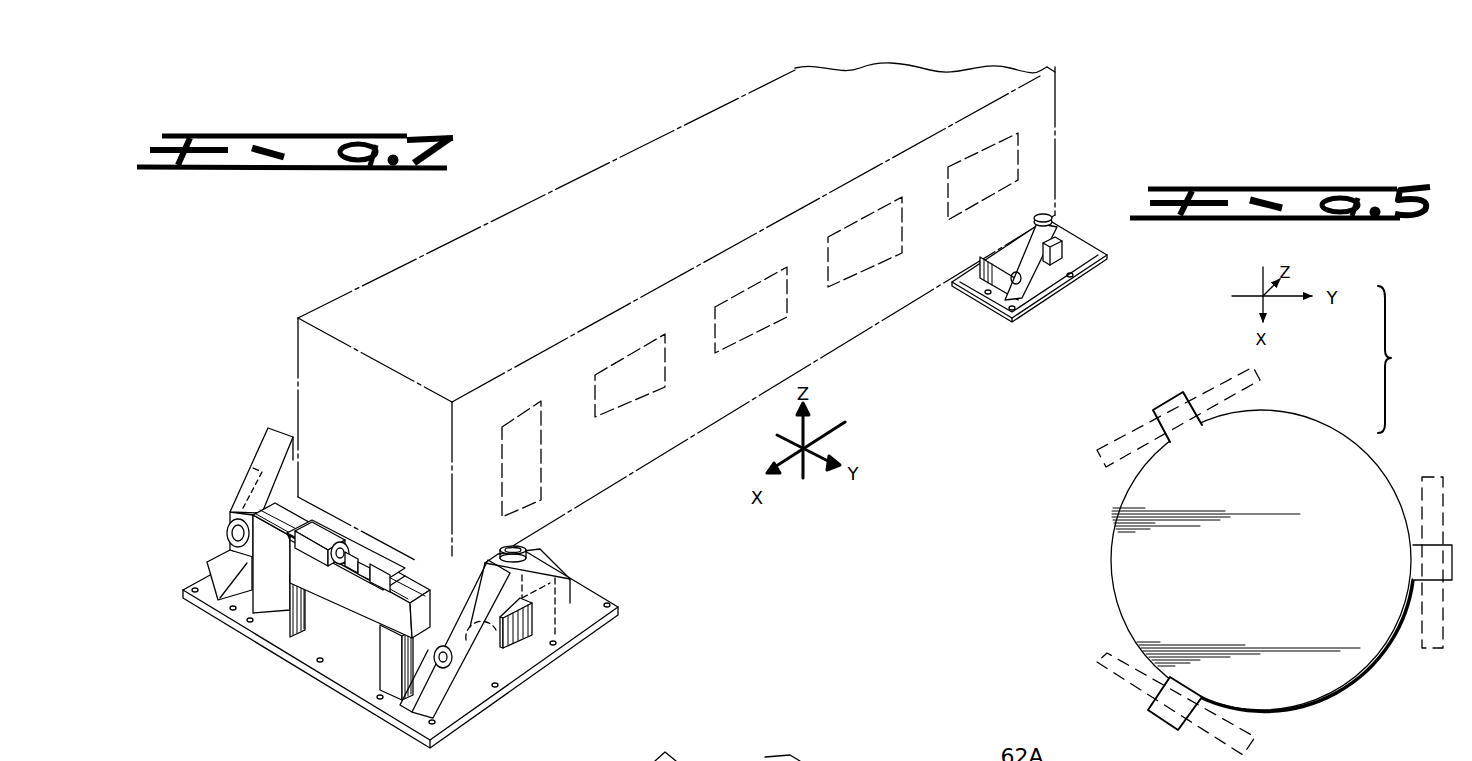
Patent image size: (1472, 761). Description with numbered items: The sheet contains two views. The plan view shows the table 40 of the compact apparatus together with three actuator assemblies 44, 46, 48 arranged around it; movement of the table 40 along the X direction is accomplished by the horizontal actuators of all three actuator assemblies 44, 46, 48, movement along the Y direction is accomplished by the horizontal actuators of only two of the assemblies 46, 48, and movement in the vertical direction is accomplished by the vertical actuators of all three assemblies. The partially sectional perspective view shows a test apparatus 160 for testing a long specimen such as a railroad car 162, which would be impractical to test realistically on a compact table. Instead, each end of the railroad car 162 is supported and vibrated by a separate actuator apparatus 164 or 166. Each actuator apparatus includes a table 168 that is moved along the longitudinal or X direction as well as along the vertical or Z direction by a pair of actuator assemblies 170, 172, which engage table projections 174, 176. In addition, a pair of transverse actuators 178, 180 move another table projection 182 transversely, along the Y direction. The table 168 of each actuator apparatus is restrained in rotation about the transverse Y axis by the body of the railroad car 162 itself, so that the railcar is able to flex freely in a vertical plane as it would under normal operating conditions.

In FIG. 7, the railroad car 162 is at (548, 210).
In FIG. 7, the test apparatus 160 is at (910, 399).
In FIG. 7, the actuator apparatus 164 is at (416, 570).
In FIG. 7, the actuator apparatus 166 is at (1074, 283).
In FIG. 7, the table 168 is at (319, 615).
In FIG. 7, the actuator assembly 170 is at (510, 660).
In FIG. 7, the actuator assembly 172 is at (243, 477).
In FIG. 7, the table projection 174 is at (533, 628).
In FIG. 7, the table projection 176 is at (253, 468).
In FIG. 7, the transverse actuator 178 is at (323, 553).
In FIG. 7, the transverse actuator 180 is at (385, 586).
In FIG. 7, the table projection 182 is at (346, 578).
In FIG. 5, the table 40 is at (1355, 683).
In FIG. 5, the actuator assembly 44 is at (1432, 474).
In FIG. 5, the actuator assembly 46 is at (1257, 749).
In FIG. 5, the actuator assembly 48 is at (1247, 393).